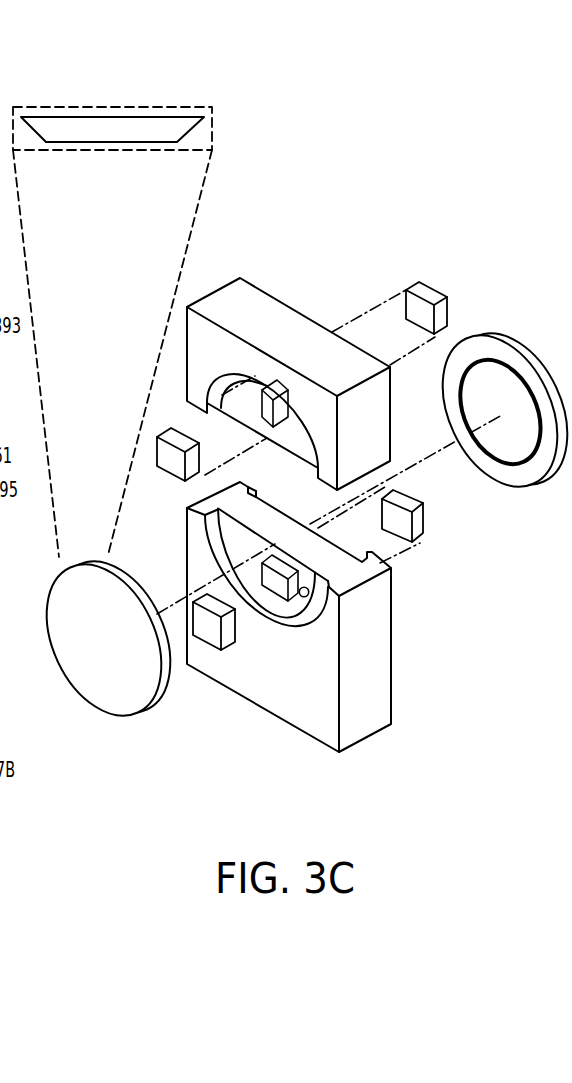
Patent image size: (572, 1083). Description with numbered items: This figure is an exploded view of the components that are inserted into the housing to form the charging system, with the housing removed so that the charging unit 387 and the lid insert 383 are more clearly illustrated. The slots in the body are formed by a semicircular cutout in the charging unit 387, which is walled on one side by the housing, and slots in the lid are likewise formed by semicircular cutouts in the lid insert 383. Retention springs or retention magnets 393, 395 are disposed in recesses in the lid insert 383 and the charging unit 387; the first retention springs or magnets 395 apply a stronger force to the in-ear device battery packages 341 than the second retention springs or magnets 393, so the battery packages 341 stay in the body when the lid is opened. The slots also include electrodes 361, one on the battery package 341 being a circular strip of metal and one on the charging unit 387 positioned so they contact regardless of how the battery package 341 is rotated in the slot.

The in-ear device battery package 341 is at (78, 122).
The electrode 361 is at (498, 367).
The lid insert 383 is at (242, 303).
The charging unit 387 is at (312, 718).
The second retention springs/magnets 393 is at (425, 293).
The first retention springs/magnets 395 is at (422, 522).